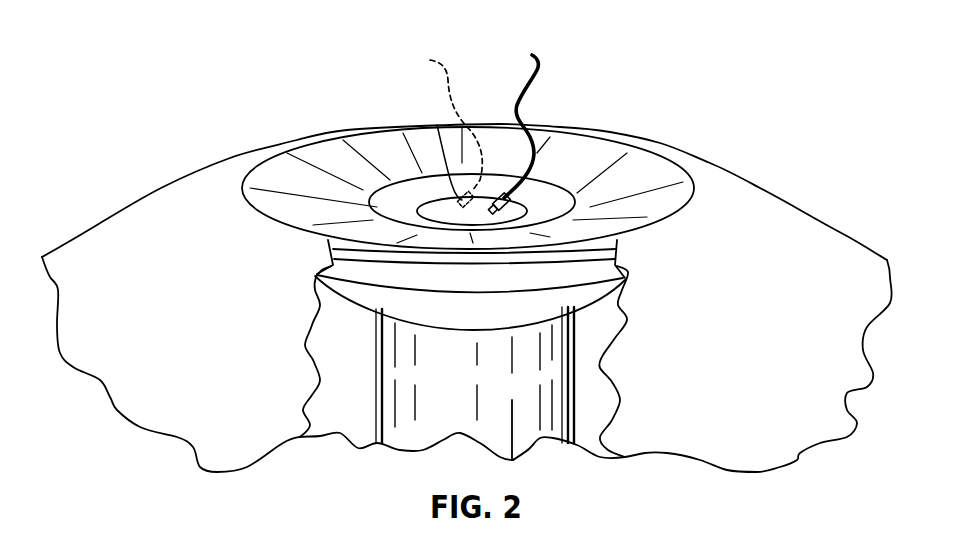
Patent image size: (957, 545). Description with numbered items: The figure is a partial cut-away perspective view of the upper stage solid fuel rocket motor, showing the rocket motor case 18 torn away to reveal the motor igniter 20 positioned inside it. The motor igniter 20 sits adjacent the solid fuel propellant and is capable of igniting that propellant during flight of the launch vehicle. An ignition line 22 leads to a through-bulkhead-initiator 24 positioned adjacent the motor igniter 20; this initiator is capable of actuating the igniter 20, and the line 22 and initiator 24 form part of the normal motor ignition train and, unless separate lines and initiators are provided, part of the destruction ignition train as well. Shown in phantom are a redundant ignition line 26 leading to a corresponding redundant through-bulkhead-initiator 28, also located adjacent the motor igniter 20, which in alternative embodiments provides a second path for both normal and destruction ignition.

The rocket motor case 18 is at (218, 214).
The motor igniter 20 is at (527, 418).
The ignition line 22 is at (539, 73).
The through-bulkhead-initiator 24 is at (513, 197).
The redundant ignition line 26 is at (447, 70).
The redundant through-bulkhead-initiator 28 is at (437, 125).